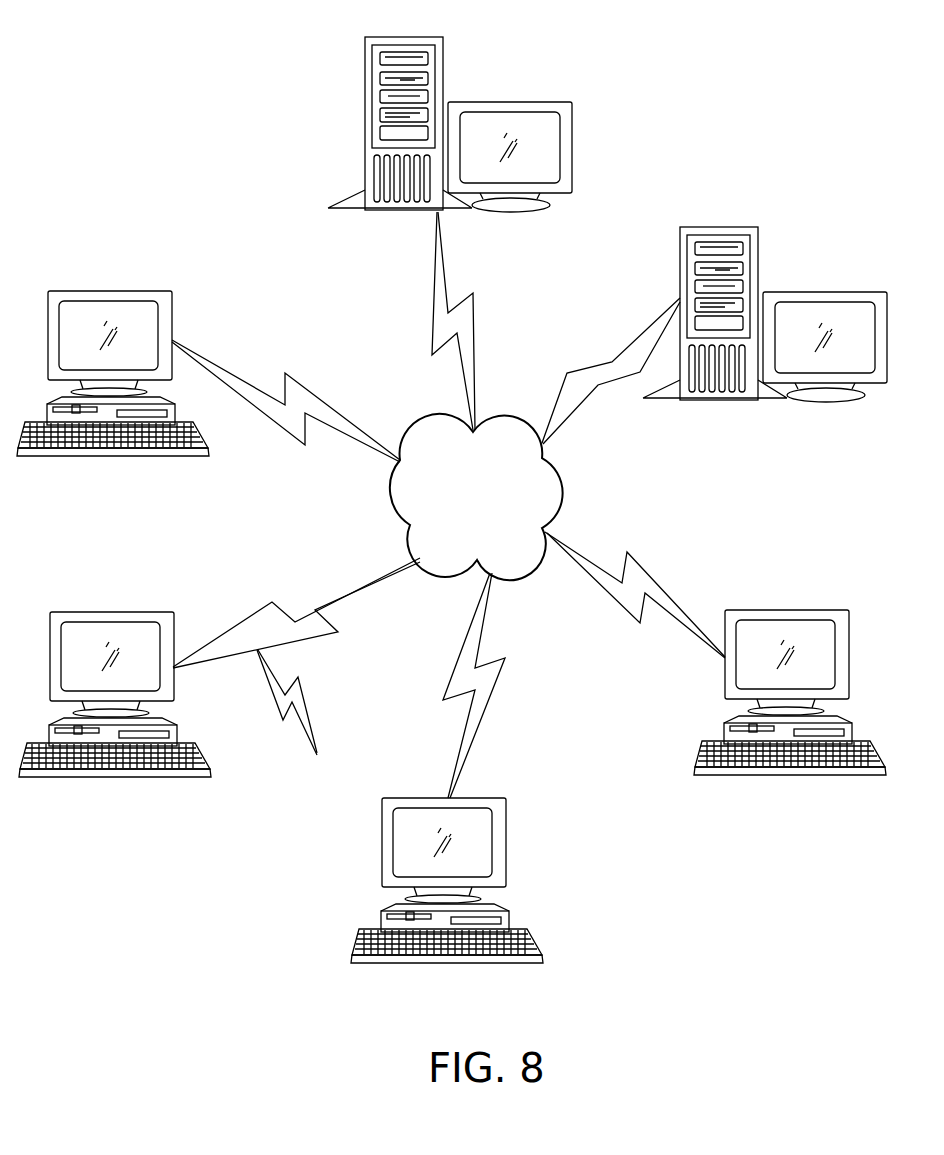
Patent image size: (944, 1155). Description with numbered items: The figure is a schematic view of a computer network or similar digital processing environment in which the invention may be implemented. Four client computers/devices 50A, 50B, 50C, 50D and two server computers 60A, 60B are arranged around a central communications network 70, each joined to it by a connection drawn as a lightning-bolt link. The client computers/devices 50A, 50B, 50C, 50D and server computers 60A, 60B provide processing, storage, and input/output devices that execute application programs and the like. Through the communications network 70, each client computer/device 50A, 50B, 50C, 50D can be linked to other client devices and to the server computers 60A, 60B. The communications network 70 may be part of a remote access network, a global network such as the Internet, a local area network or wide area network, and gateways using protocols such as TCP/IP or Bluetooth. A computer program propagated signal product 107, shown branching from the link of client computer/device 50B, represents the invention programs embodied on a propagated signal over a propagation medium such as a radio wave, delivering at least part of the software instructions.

The client computer/device 50A is at (107, 290).
The client computer/device 50B is at (110, 611).
The client computer/device 50C is at (503, 838).
The client computer/device 50D is at (786, 608).
The server computer 60A is at (365, 81).
The server computer 60B is at (732, 225).
The communications network 70 is at (490, 531).
The computer program propagated signal product 107 is at (303, 693).